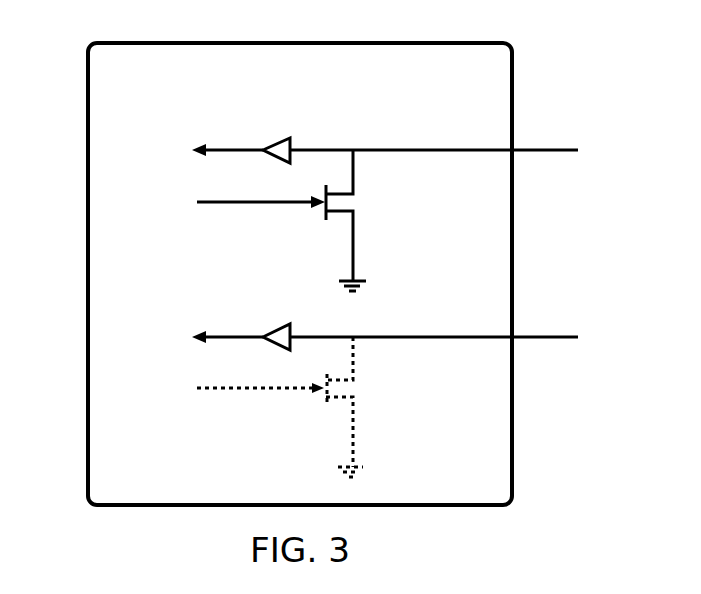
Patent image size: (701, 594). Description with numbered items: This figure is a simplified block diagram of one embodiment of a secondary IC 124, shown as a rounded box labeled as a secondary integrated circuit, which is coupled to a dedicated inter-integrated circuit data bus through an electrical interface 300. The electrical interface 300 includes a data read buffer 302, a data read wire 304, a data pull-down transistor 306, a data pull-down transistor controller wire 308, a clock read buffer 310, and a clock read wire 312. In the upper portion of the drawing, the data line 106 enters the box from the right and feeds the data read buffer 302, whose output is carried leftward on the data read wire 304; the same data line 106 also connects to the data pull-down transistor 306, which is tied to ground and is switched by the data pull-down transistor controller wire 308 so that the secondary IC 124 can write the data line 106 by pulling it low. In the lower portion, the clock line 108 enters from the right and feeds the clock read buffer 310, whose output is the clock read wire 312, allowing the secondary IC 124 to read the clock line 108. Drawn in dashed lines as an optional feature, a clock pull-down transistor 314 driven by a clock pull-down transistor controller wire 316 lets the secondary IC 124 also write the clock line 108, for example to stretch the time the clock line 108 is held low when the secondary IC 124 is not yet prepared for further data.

The secondary IC 124 is at (128, 43).
The electrical interface 300 is at (99, 110).
The data line 106 is at (550, 148).
The clock line 108 is at (550, 335).
The data read buffer 302 is at (287, 140).
The data read wire 304 is at (233, 150).
The data pull-down transistor 306 is at (326, 216).
The data pull-down transistor controller wire 308 is at (233, 202).
The clock read buffer 310 is at (284, 324).
The clock read wire 312 is at (234, 337).
The clock pull-down transistor 314 is at (326, 400).
The clock pull-down transistor controller wire 316 is at (235, 388).